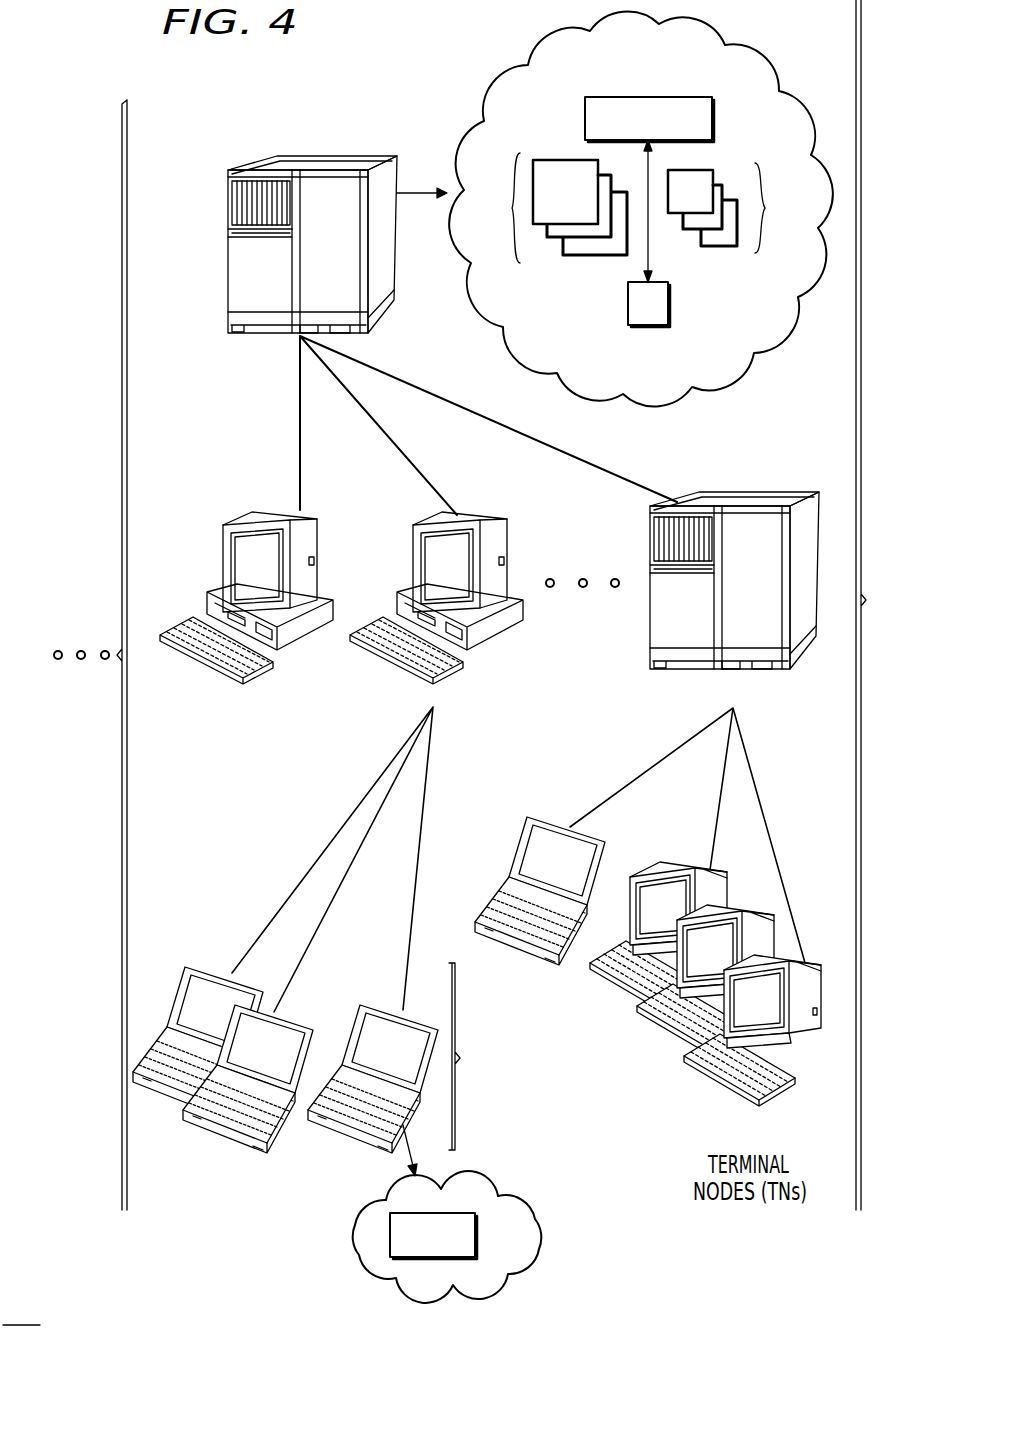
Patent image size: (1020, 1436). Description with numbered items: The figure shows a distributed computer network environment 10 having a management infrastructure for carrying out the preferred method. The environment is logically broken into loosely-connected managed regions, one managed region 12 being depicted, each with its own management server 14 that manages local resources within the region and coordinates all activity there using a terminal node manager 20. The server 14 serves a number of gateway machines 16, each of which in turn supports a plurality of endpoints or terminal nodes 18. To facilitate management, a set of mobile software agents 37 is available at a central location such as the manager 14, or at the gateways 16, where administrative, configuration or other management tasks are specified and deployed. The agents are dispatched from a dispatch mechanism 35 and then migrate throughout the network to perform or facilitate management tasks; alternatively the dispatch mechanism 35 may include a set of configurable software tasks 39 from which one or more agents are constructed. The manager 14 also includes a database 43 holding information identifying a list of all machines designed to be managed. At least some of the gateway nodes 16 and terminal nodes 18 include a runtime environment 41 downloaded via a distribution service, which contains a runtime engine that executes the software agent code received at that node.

The distributed computer environment 10 is at (226, 872).
The managed region 12 is at (872, 313).
The management server 14 is at (228, 278).
The gateway machine 16 is at (222, 547).
The endpoint 18 is at (310, 1084).
The terminal node manager 20 is at (186, 160).
The dispatch mechanism 35 is at (713, 118).
The software agents 37 is at (555, 208).
The configurable software tasks 39 is at (730, 208).
The runtime environment 41 is at (476, 1235).
The database 43 is at (668, 305).